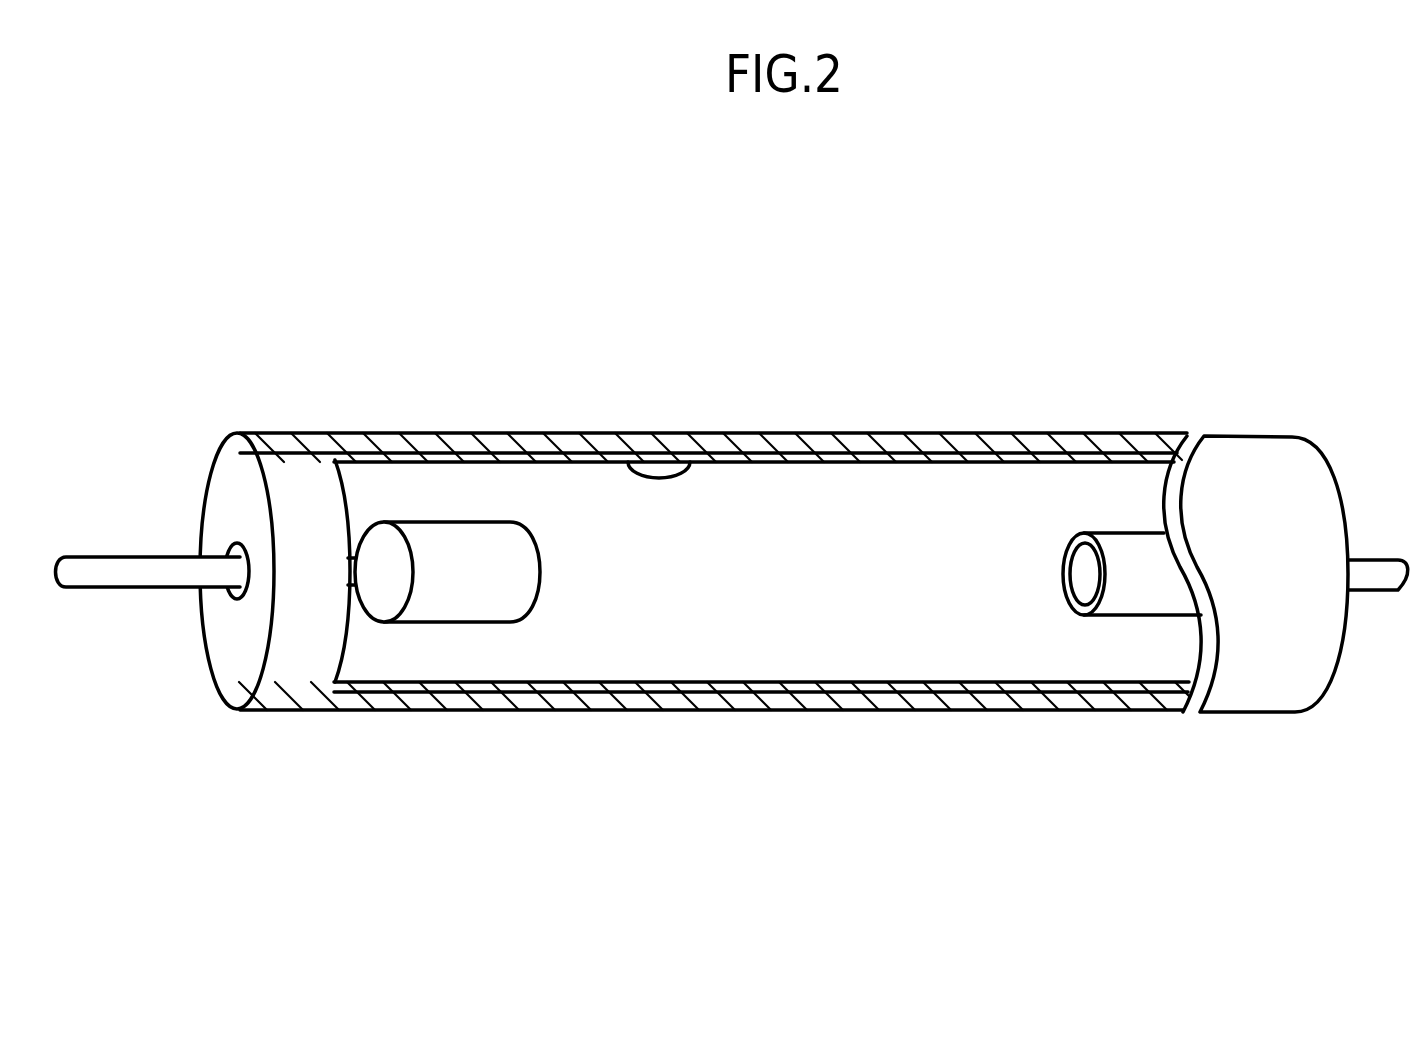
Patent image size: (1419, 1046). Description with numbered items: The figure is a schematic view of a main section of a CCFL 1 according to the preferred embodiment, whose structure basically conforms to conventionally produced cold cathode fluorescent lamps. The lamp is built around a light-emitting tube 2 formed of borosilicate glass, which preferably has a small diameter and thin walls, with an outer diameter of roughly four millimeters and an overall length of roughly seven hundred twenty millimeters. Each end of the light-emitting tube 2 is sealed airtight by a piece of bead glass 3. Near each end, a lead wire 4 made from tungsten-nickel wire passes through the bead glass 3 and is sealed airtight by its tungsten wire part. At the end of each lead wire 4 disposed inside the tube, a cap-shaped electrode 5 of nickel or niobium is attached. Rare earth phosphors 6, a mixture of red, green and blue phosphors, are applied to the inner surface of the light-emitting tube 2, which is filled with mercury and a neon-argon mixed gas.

The CCFL 1 is at (1347, 787).
The light-emitting tube 2 is at (967, 445).
The bead glass 3 is at (227, 483).
The lead wire 4 is at (102, 567).
The electrode 5 is at (437, 550).
The rare earth phosphors 6 is at (675, 680).